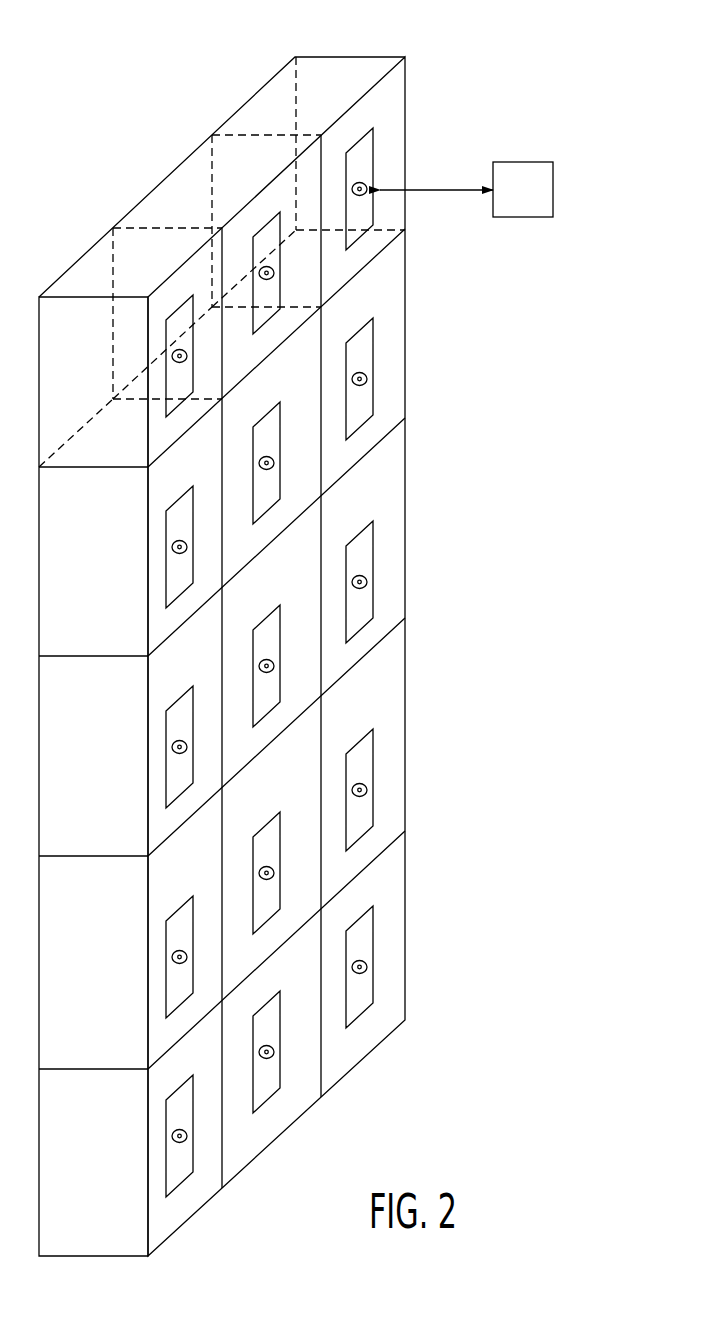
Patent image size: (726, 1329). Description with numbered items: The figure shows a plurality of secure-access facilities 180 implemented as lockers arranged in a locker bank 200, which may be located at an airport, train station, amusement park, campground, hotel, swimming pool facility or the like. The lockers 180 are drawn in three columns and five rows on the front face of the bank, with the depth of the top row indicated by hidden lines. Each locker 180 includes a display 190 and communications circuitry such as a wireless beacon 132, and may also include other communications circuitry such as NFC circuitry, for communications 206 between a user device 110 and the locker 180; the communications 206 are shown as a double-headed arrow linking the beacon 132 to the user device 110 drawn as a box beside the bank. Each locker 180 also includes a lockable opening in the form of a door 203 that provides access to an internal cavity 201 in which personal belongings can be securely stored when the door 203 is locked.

The locker bank 200 is at (548, 412).
The secure-access facility 180 is at (417, 86).
The internal cavity 201 is at (343, 73).
The door 203 is at (333, 273).
The display 190 is at (363, 152).
The wireless beacon 132 is at (366, 182).
The user device 110 is at (522, 170).
The communications 206 is at (452, 193).